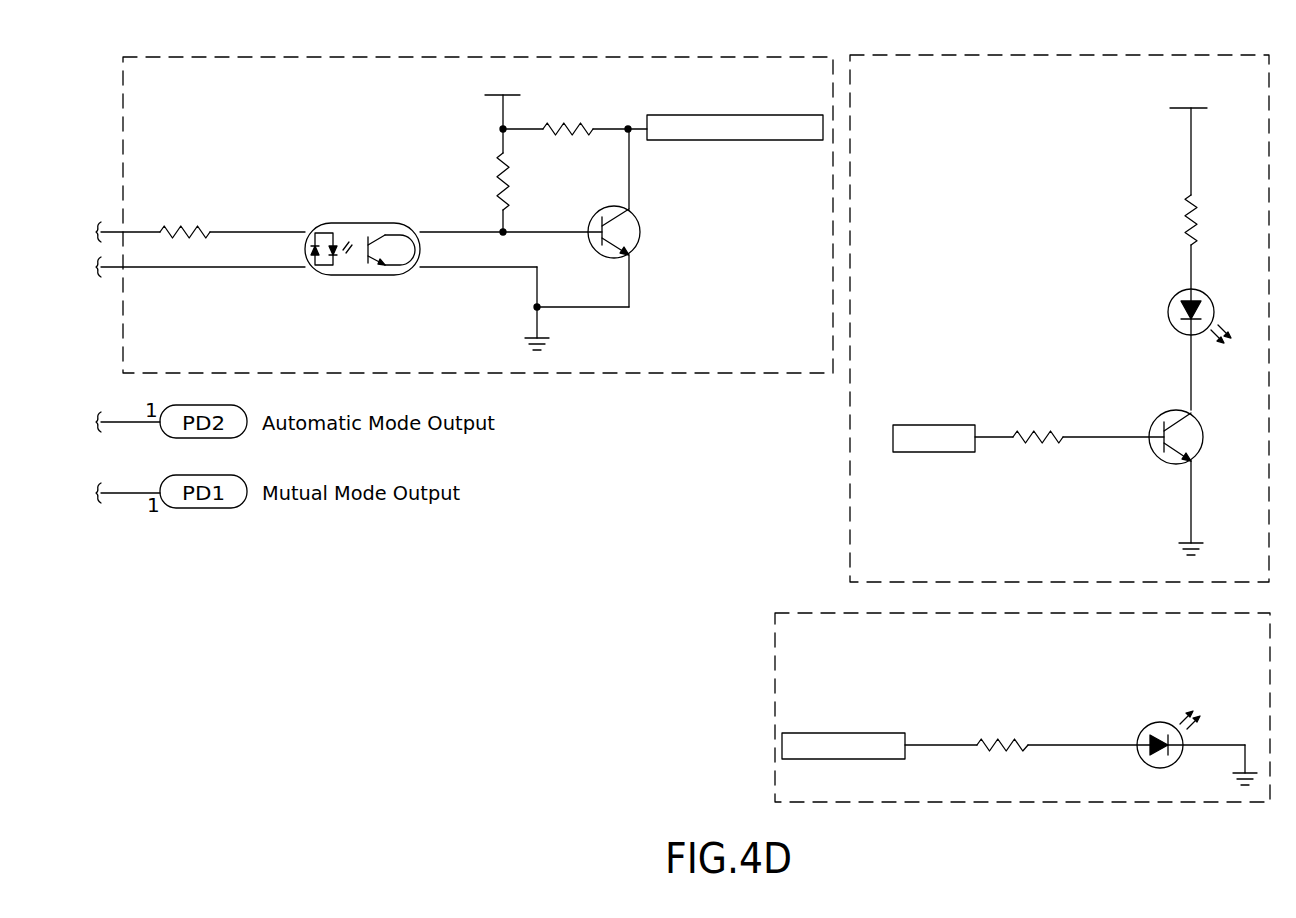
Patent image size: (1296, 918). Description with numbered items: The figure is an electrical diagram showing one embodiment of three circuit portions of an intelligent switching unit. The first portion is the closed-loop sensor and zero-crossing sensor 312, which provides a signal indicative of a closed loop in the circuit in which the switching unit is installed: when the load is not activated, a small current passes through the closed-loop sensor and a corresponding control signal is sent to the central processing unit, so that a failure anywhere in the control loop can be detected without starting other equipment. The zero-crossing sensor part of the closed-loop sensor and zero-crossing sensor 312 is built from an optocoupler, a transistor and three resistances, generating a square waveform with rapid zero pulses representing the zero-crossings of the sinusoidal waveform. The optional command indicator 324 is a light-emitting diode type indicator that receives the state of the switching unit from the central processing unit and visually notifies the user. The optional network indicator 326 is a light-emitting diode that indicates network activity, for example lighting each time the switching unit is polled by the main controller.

The closed-loop sensor and zero-crossing sensor 312 is at (740, 374).
The command indicator 324 is at (852, 507).
The network indicator 326 is at (773, 708).